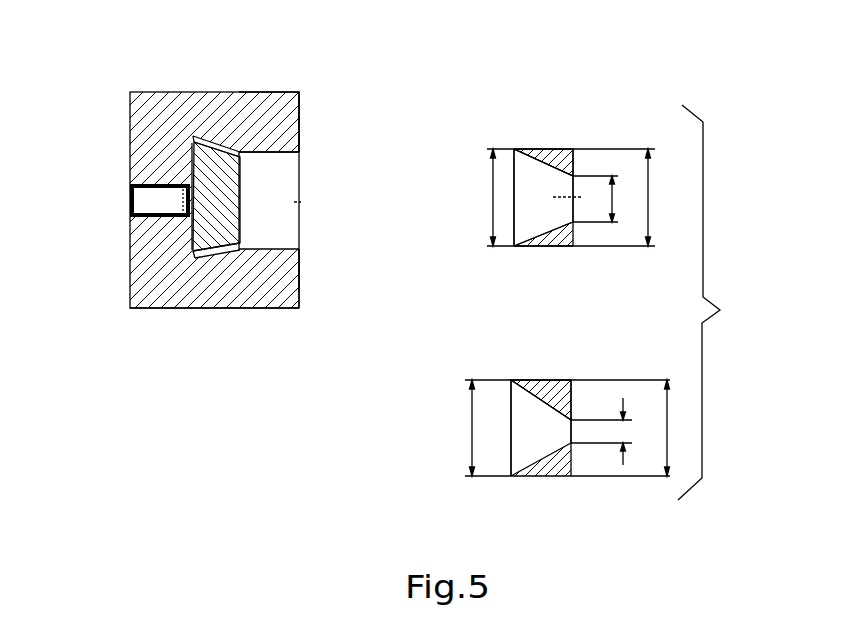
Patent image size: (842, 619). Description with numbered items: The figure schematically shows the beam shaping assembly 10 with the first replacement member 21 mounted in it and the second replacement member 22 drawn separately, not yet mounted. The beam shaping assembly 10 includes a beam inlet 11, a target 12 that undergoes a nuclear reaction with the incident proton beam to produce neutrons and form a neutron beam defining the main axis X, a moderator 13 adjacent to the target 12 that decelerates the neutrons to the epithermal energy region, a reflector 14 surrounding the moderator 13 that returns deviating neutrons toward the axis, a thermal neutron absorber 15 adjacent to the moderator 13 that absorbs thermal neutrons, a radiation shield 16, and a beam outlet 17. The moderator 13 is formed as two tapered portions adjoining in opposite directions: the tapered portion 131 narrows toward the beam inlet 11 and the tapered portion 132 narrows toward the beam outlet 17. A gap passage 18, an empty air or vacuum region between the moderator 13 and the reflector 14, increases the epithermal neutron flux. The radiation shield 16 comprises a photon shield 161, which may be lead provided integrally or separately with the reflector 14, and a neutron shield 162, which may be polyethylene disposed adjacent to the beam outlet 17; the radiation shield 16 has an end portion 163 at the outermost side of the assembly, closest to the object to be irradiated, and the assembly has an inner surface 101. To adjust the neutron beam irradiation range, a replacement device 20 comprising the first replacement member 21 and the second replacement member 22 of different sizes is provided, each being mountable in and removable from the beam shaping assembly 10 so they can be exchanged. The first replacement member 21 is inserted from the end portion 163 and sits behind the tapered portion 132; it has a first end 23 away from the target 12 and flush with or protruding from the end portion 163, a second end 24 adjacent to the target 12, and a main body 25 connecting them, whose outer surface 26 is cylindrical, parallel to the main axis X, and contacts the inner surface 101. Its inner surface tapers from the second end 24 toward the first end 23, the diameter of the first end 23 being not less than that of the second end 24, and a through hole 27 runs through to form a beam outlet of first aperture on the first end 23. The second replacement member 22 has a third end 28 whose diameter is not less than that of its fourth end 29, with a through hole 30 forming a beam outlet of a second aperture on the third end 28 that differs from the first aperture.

The beam shaping assembly 10 is at (154, 38).
The beam inlet 11 is at (131, 187).
The target 12 is at (183, 198).
The moderator 13 is at (198, 234).
The reflector 14 is at (202, 285).
The thermal neutron absorber 15 is at (247, 250).
The radiation shield 16 is at (377, 103).
The beam outlet 17 is at (299, 230).
The gap passage 18 is at (228, 152).
The replacement device 20 is at (716, 302).
The first replacement member 21 is at (524, 118).
The second replacement member 22 is at (515, 358).
The first end 23 is at (565, 153).
The second end 24 is at (515, 228).
The main body 25 is at (533, 180).
The outer surface 26 is at (547, 247).
The through hole 27 is at (568, 212).
The third end 28 is at (572, 420).
The fourth end 29 is at (511, 407).
The through hole 30 is at (570, 425).
The inner surface 101 is at (300, 288).
The tapered portion 131 is at (187, 150).
The tapered portion 132 is at (212, 263).
The photon shield 161 is at (283, 133).
The neutron shield 162 is at (300, 153).
The end portion 163 is at (300, 263).